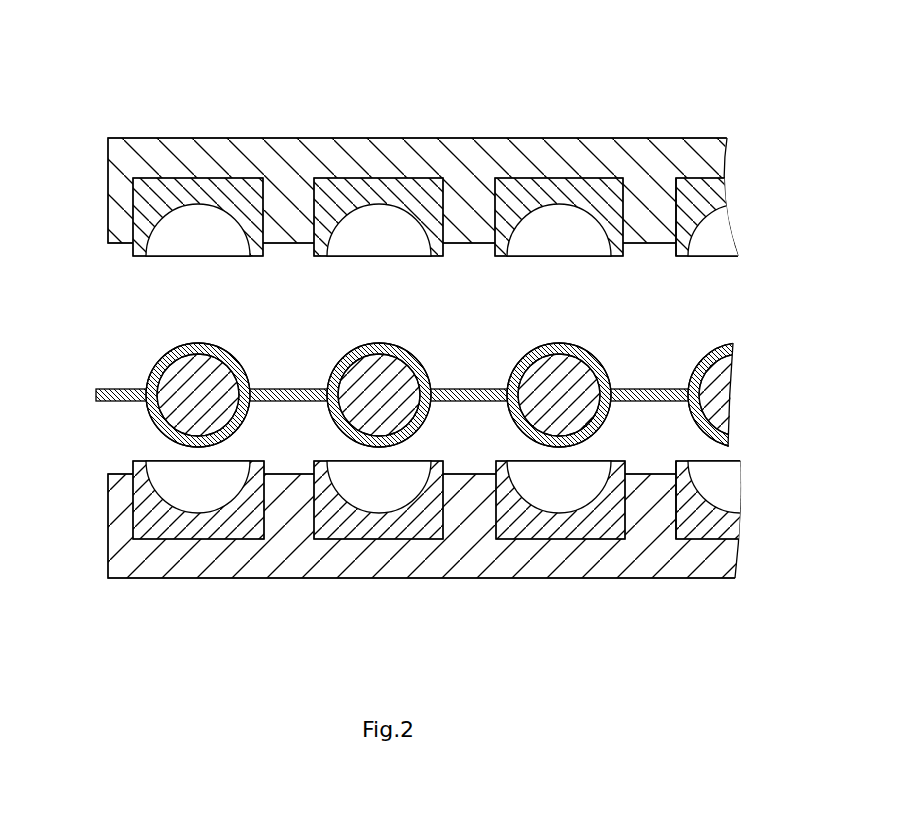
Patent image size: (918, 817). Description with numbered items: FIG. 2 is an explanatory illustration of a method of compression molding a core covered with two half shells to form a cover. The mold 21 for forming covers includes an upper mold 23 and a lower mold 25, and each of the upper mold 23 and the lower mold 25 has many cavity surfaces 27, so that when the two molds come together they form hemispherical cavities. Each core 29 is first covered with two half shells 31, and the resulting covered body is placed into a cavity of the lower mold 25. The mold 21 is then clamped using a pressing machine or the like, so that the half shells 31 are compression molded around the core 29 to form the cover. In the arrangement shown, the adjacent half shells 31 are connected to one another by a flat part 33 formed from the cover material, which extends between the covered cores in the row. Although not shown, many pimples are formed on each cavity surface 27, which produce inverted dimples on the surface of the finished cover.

The mold 21 is at (672, 98).
The upper mold 23 is at (421, 152).
The lower mold 25 is at (420, 560).
The cavity surfaces 27 is at (532, 220).
The core 29 is at (205, 363).
The half shells 31 is at (190, 342).
The flat part 33 is at (119, 399).